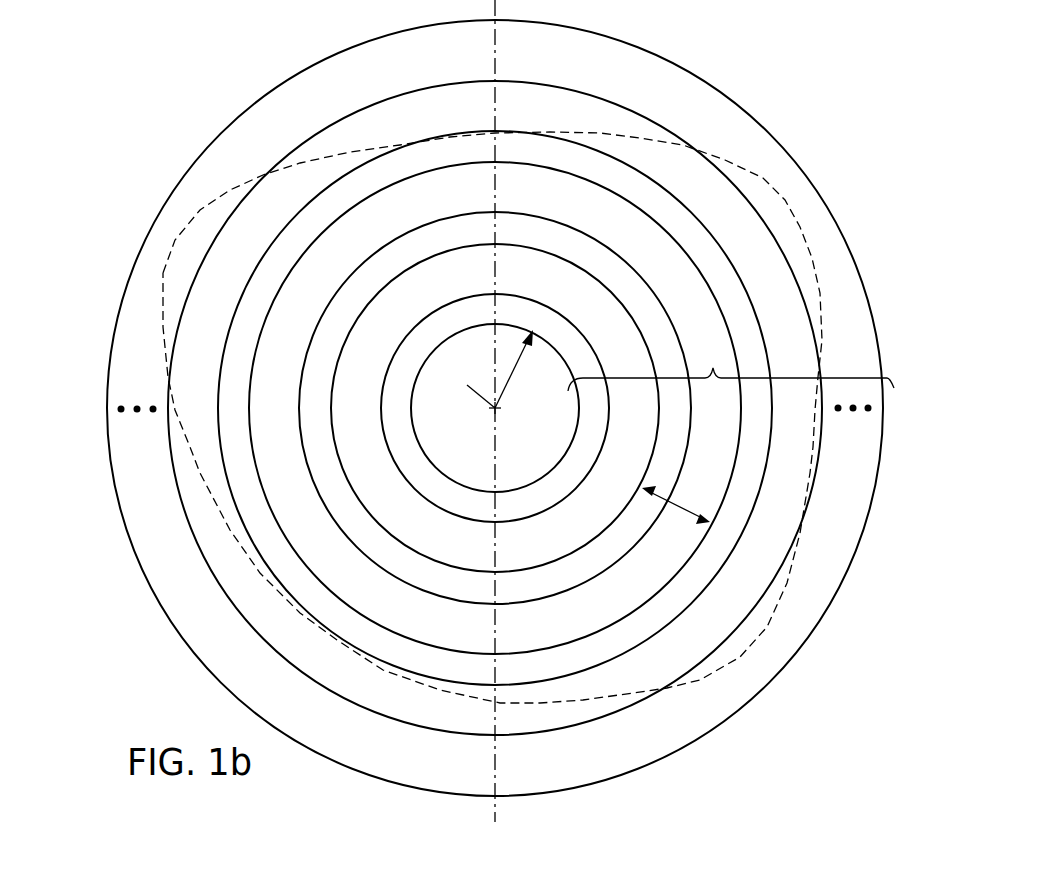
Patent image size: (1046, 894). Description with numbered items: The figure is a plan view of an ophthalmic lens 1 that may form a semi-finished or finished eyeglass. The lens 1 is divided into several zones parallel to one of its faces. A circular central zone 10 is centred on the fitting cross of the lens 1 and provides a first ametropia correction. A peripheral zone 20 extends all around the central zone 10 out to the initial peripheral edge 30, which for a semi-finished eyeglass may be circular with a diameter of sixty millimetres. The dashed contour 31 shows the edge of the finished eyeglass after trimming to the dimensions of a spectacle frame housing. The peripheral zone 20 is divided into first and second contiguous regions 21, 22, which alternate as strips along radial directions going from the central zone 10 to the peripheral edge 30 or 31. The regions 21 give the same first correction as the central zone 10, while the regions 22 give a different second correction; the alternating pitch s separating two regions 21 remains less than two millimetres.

The ophthalmic lens 1 is at (256, 51).
The central zone 10 is at (483, 460).
The peripheral zone 20 is at (731, 366).
The first regions 21 is at (646, 418).
The second regions 22 is at (606, 418).
The initial peripheral edge 30 is at (853, 250).
The contour 31 is at (763, 178).